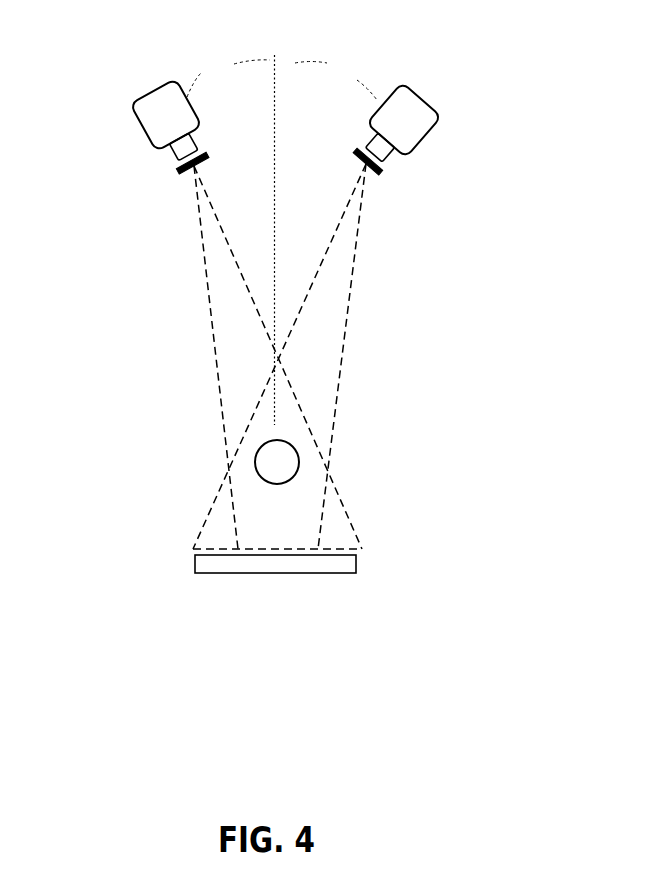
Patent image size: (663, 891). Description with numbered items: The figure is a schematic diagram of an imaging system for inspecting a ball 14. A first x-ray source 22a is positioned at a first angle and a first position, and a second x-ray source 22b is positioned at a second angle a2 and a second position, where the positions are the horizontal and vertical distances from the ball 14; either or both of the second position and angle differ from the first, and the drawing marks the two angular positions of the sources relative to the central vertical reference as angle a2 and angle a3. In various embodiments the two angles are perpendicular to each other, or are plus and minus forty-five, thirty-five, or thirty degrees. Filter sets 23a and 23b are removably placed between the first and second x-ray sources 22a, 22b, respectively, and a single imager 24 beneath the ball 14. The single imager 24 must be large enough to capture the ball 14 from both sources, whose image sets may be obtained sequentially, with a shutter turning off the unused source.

The ball 14 is at (245, 460).
The first x-ray source 22a is at (137, 118).
The second x-ray source 22b is at (437, 105).
The filter set 23a is at (172, 174).
The filter set 23b is at (380, 170).
The single imager 24 is at (242, 576).
The second angle a2 is at (228, 76).
The angle alpha 3 a3 is at (336, 78).